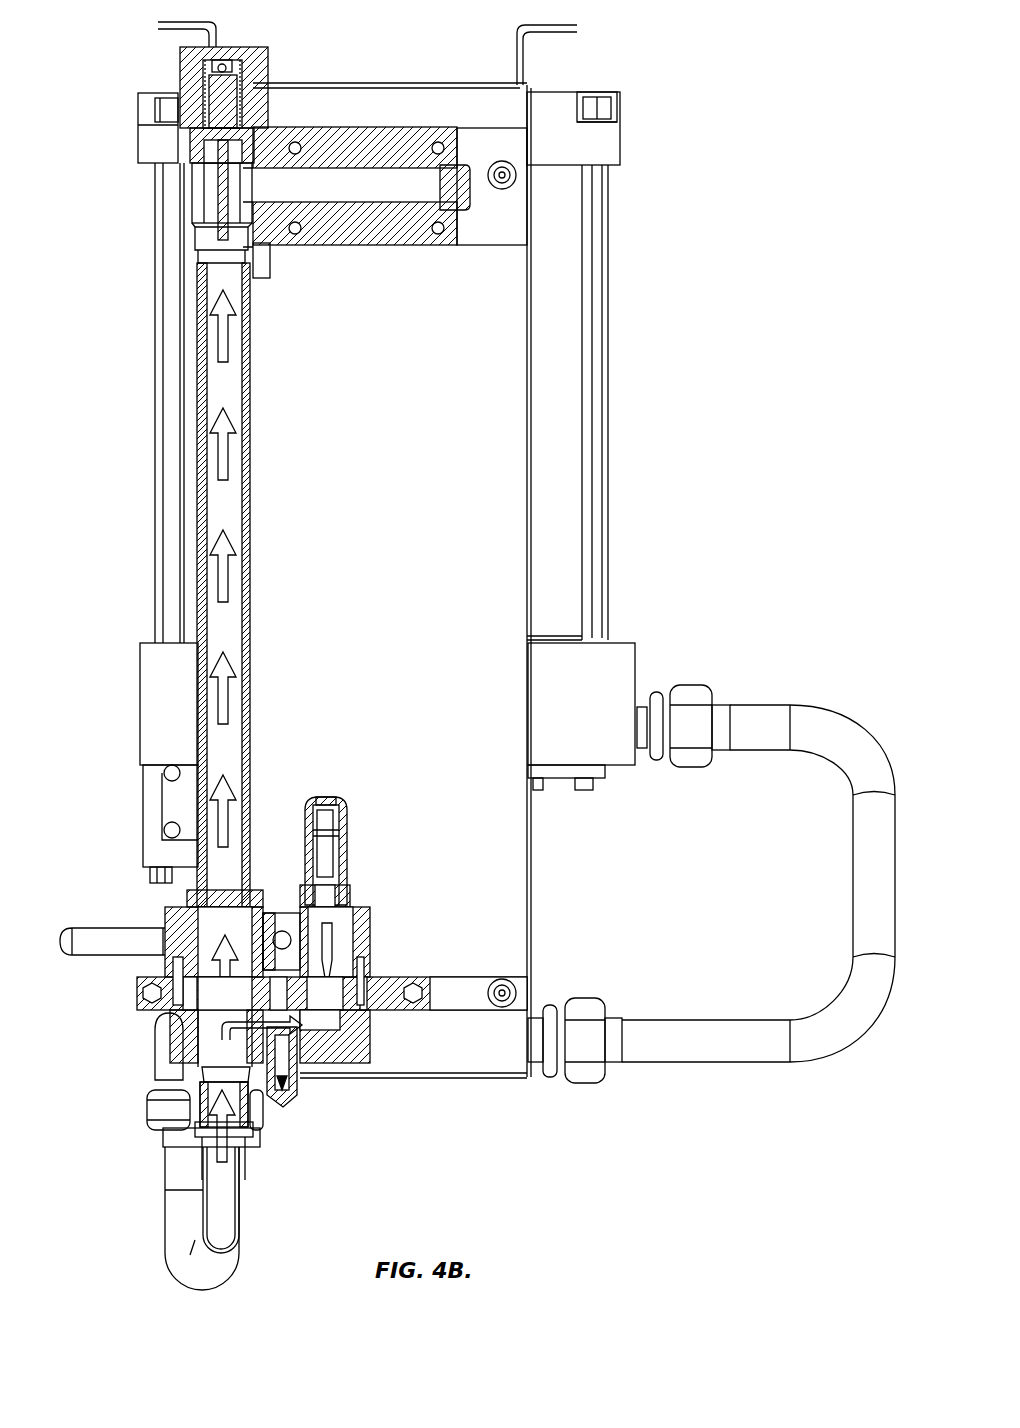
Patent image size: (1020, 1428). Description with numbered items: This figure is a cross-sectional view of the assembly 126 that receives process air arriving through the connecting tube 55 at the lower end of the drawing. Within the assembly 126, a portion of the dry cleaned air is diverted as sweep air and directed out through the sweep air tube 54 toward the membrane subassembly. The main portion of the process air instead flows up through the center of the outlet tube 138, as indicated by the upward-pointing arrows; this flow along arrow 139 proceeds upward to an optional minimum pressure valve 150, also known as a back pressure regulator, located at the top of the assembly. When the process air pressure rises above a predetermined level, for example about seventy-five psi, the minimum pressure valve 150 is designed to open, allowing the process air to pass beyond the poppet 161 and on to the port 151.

The minimum pressure valve 150 is at (140, 240).
The poppet 161 is at (194, 231).
The port 151 is at (376, 203).
The process air flow arrow 139 is at (216, 584).
The outlet tube 138 is at (198, 851).
The sweep air tube 54 is at (105, 935).
The assembly 126 is at (86, 1086).
The connecting tube 55 is at (185, 1218).